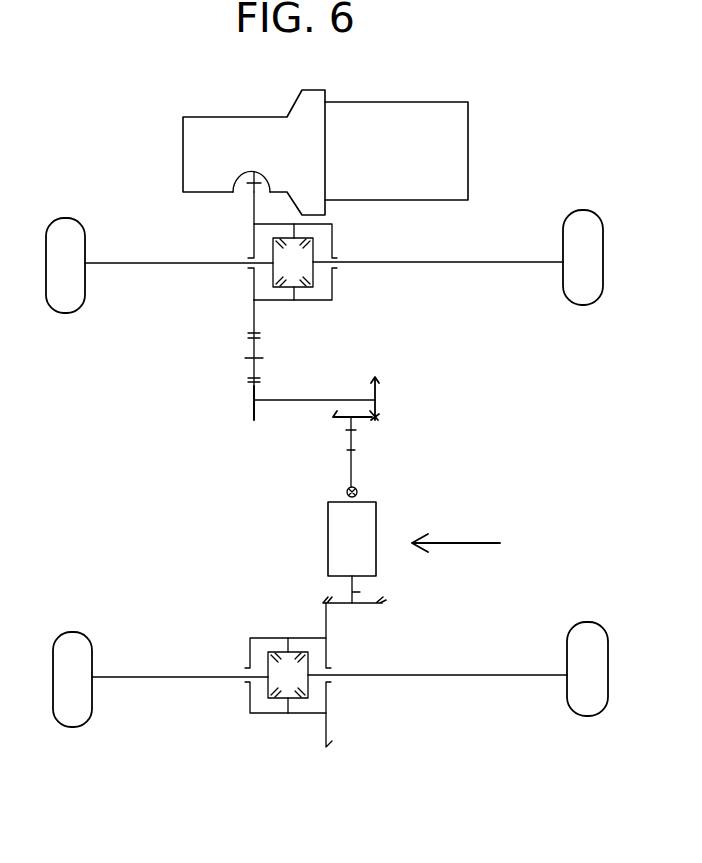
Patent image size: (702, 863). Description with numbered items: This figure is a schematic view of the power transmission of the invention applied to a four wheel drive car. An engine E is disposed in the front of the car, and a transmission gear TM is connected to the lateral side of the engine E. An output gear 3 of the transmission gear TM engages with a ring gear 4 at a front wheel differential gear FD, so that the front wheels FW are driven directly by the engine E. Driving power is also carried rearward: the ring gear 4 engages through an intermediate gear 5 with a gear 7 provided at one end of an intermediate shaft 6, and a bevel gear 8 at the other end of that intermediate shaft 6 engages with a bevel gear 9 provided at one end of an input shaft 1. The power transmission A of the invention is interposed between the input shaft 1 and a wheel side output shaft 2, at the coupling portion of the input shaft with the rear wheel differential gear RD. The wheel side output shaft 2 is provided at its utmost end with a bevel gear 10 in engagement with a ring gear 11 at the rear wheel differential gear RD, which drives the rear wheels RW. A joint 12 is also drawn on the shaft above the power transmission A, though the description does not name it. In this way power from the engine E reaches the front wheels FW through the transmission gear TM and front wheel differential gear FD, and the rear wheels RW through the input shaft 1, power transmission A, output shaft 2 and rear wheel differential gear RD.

The input shaft 1 is at (358, 426).
The wheel side output shaft 2 is at (360, 592).
The output gear 3 is at (249, 178).
The ring gear 4 is at (253, 213).
The intermediate gear 5 is at (249, 346).
The intermediate shaft 6 is at (310, 400).
The gear 7 is at (250, 407).
The bevel gear 8 is at (380, 390).
The bevel gear 9 is at (338, 422).
The bevel gear 10 is at (372, 606).
The ring gear 11 is at (324, 616).
The universal joint 12 is at (359, 491).
The transmission gear TM is at (235, 118).
The engine E is at (387, 104).
The front wheels FW is at (88, 245).
The front wheel differential gear FD is at (333, 296).
The rear wheels RW is at (93, 646).
The rear wheel differential gear RD is at (262, 637).
The power transmission A is at (427, 539).